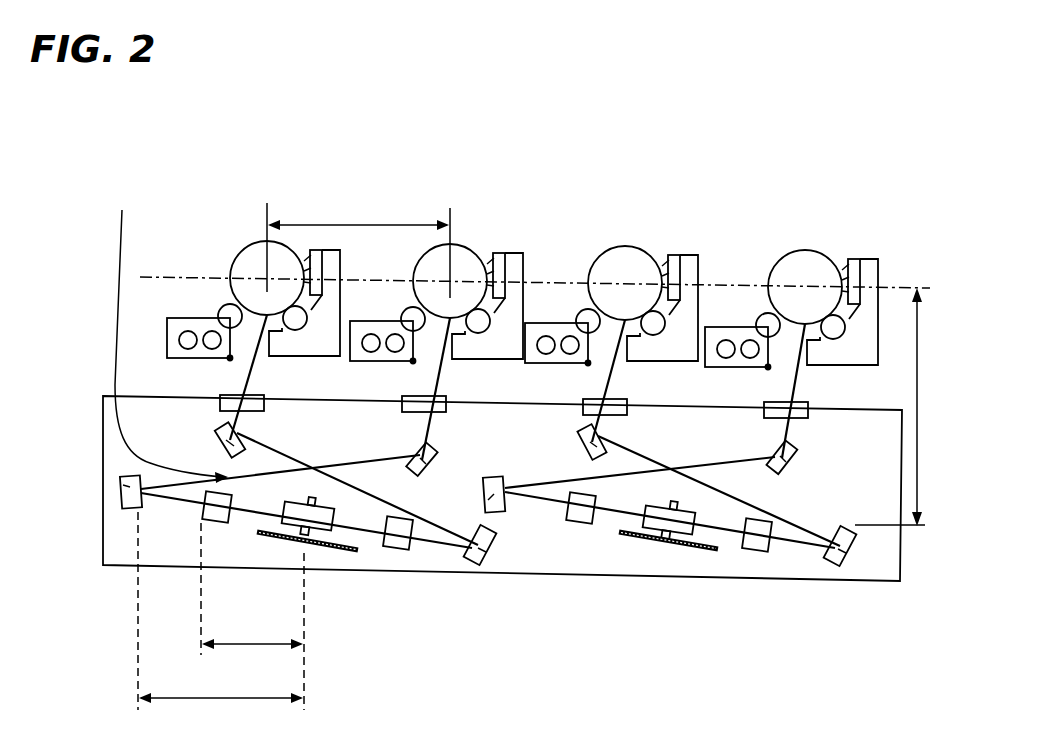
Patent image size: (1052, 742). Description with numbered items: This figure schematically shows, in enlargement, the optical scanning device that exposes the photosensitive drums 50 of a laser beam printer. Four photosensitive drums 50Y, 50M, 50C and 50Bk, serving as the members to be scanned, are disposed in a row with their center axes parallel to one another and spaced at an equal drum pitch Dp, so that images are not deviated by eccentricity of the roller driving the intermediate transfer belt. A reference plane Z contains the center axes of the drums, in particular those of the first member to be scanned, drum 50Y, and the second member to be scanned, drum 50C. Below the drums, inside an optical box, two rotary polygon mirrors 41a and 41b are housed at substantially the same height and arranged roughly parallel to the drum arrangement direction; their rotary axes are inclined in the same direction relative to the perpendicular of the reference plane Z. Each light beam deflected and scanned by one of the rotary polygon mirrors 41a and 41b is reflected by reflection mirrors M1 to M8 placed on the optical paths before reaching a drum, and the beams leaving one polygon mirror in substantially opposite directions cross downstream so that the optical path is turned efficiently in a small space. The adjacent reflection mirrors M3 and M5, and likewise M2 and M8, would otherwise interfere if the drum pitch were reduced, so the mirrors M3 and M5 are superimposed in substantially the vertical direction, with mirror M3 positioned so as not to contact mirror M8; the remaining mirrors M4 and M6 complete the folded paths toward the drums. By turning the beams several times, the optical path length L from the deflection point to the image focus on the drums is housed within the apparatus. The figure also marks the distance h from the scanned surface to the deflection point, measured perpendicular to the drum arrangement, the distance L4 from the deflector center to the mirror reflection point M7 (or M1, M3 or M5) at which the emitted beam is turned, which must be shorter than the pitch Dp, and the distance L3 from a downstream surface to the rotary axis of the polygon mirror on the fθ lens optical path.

The photosensitive drum 50 is at (522, 251).
The photosensitive drum 50Y is at (244, 272).
The photosensitive drum 50M is at (462, 267).
The photosensitive drum 50C is at (622, 267).
The photosensitive drum 50Bk is at (787, 262).
The reflection mirror M1 is at (835, 563).
The reflection mirror M2 is at (588, 452).
The reflection mirror M3 is at (495, 505).
The reflection mirror M4 is at (785, 470).
The reflection mirror M5 is at (490, 553).
The reflection mirror M6 is at (222, 452).
The reflection mirror M7 is at (119, 490).
The reflection mirror M8 is at (430, 466).
The rotary polygon mirror 41a is at (648, 538).
The rotary polygon mirror 41b is at (327, 537).
The length of optical path L is at (171, 335).
The reference plane Z is at (168, 278).
The drum pitch Dp is at (358, 250).
The distance from surface to be scanned to deflection point h is at (897, 407).
The distance from downstream surface to rotary axis L3 is at (252, 616).
The distance from deflector center to mirror reflection point L4 is at (220, 611).